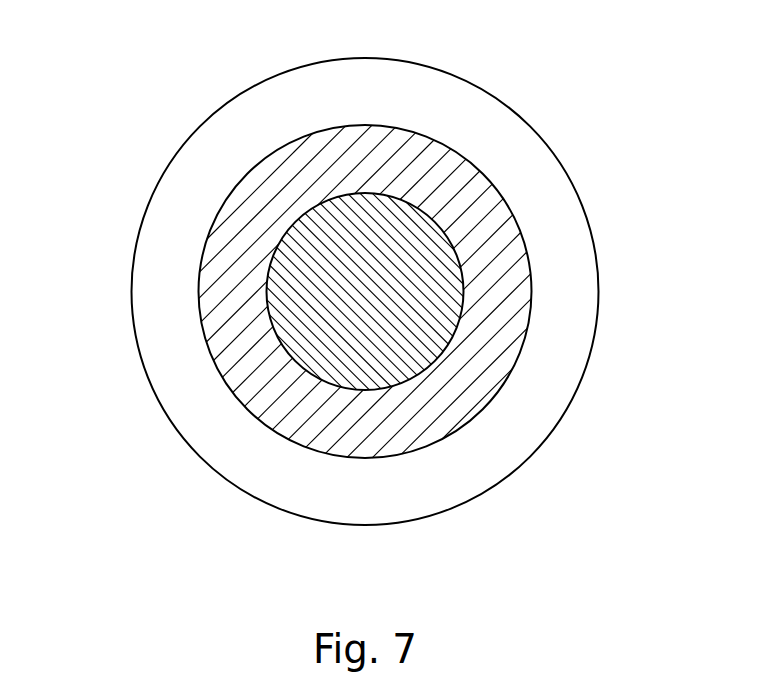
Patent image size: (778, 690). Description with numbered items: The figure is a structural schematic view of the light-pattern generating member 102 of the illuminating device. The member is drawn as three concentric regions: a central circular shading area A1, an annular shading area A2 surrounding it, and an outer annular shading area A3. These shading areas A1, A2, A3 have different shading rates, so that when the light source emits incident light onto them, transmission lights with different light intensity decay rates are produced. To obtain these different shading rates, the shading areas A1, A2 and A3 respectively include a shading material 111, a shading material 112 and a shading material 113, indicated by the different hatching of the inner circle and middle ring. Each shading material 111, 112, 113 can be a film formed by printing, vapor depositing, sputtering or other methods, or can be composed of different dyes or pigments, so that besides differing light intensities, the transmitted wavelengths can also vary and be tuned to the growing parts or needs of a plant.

The light-pattern generating member 102 is at (97, 48).
The shading material 111 is at (430, 323).
The shading material 112 is at (455, 380).
The shading material 113 is at (492, 457).
The shading area A1 is at (473, 195).
The shading area A2 is at (426, 239).
The shading area A3 is at (403, 307).